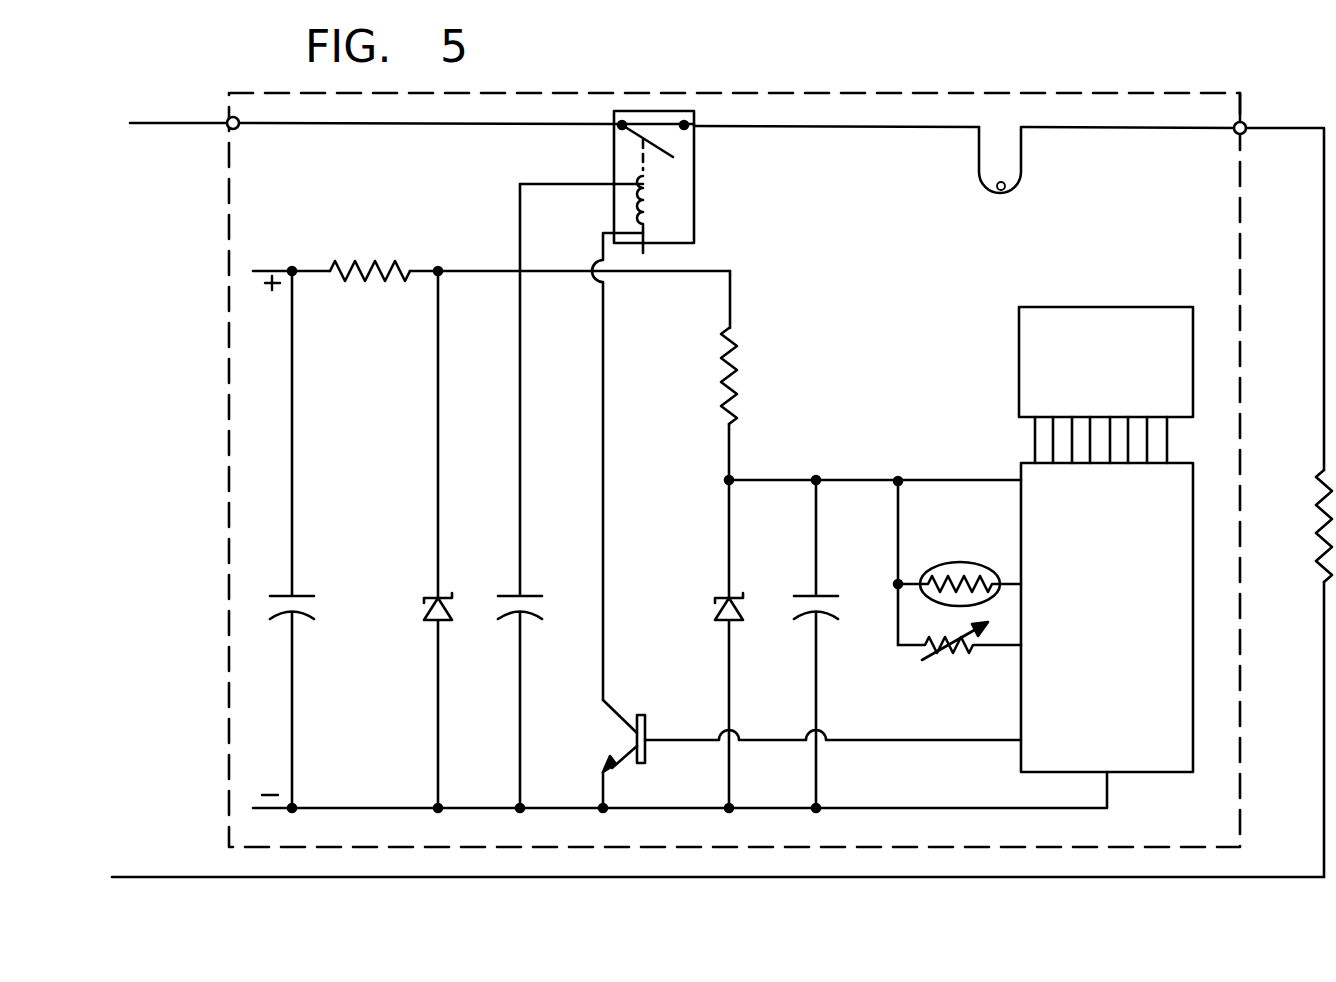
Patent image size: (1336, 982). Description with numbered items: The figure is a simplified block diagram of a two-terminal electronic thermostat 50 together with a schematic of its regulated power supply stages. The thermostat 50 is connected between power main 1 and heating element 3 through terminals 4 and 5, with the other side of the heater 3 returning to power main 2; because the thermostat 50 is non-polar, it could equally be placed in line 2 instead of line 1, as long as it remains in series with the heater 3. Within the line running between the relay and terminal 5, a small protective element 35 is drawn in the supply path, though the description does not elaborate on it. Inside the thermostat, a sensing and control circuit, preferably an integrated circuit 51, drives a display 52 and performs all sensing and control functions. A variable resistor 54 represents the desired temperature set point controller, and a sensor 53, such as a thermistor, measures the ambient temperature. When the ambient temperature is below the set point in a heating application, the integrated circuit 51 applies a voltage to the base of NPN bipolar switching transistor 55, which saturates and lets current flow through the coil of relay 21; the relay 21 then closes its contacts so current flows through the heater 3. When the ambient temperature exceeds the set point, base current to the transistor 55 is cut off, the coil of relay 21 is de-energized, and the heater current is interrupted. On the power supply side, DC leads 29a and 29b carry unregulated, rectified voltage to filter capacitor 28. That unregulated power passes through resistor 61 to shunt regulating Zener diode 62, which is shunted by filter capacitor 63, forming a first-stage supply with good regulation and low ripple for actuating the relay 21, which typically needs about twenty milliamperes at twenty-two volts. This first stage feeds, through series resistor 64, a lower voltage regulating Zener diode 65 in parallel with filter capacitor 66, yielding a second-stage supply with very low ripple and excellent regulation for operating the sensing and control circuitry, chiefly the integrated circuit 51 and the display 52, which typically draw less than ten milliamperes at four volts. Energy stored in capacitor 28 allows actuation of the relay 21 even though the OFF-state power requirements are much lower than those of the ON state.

The power main 1 is at (178, 122).
The power main 2 is at (165, 876).
The heating element 3 is at (1316, 530).
The terminal 4 is at (228, 130).
The terminal 5 is at (1246, 134).
The relay 21 is at (694, 192).
The filter capacitor 28 is at (312, 596).
The DC lead 29a is at (282, 270).
The DC lead 29b is at (356, 807).
The fuse 35 is at (1003, 193).
The electronic thermostat 50 is at (228, 500).
The integrated circuit 51 is at (1021, 722).
The display 52 is at (1019, 372).
The sensor 53 is at (960, 562).
The variable resistor 54 is at (950, 662).
The NPN bipolar switching transistor 55 is at (616, 716).
The resistor 61 is at (372, 270).
The shunt regulating Zener diode 62 is at (450, 598).
The filter capacitor 63 is at (538, 596).
The series resistor 64 is at (736, 368).
The lower voltage regulating Zener diode 65 is at (716, 598).
The filter capacitor 66 is at (830, 596).